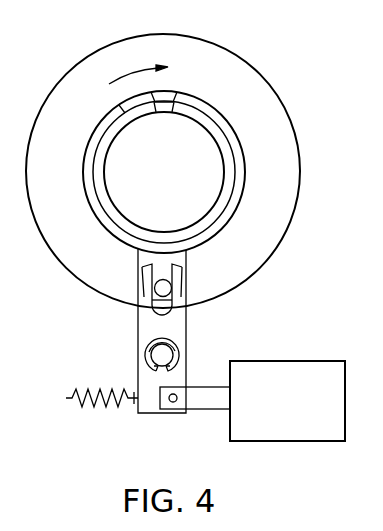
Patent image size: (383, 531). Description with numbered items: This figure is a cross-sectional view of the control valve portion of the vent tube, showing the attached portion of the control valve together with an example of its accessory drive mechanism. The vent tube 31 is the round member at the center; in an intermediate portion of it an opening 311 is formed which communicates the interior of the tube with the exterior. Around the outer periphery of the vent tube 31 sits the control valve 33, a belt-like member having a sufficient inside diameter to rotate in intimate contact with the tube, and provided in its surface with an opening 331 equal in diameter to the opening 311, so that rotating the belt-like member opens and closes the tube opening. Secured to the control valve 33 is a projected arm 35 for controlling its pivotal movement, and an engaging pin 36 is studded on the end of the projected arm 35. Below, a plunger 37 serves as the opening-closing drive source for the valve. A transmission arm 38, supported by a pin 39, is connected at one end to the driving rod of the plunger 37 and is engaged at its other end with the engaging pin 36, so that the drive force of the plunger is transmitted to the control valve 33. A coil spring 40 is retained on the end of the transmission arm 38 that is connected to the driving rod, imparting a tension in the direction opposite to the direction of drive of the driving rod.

The vent tube 31 is at (218, 138).
The control valve 33 is at (241, 194).
The opening 311 is at (166, 100).
The opening 331 is at (130, 98).
The projected arm 35 is at (187, 262).
The engaging pin 36 is at (157, 286).
The plunger 37 is at (198, 408).
The transmission arm 38 is at (180, 330).
The pin 39 is at (150, 356).
The coil spring 40 is at (90, 406).